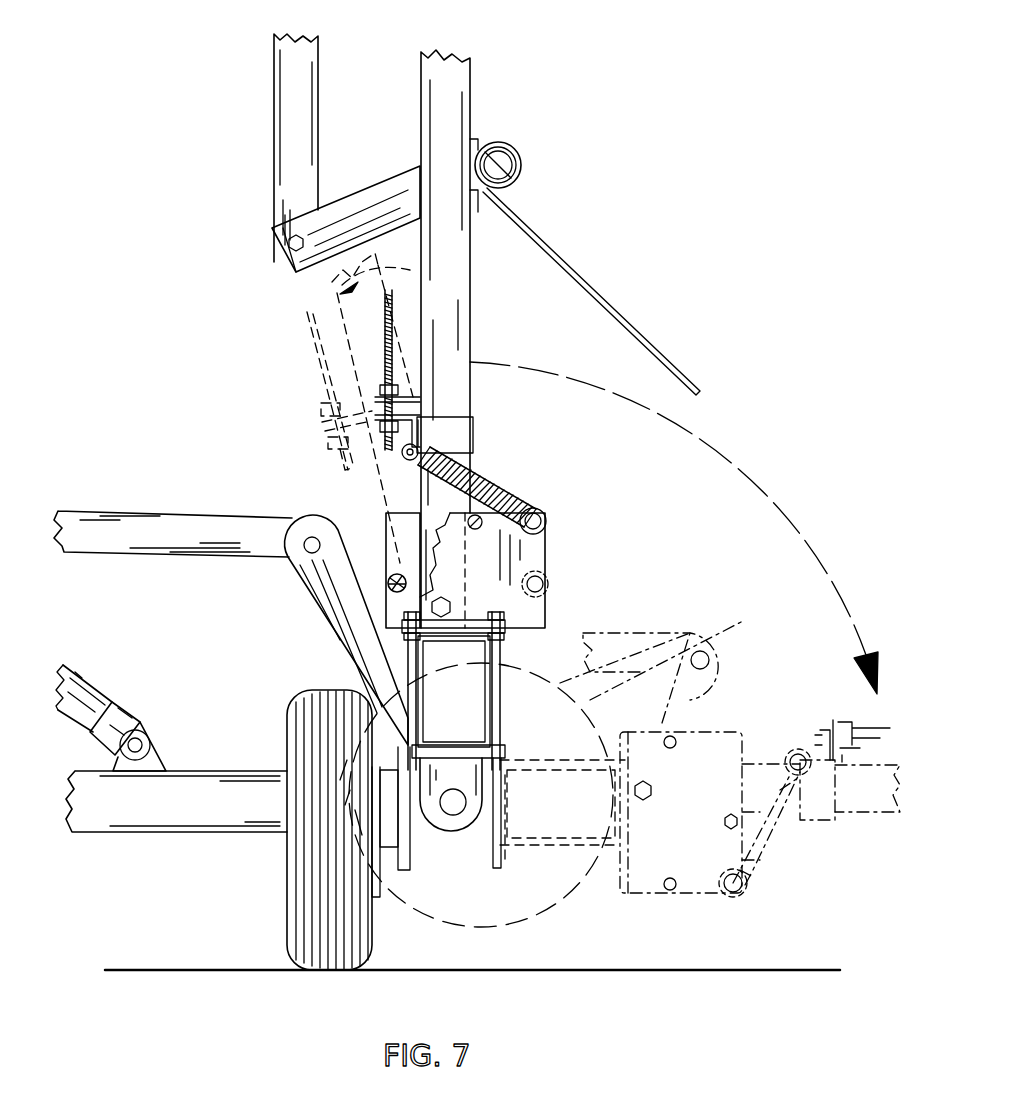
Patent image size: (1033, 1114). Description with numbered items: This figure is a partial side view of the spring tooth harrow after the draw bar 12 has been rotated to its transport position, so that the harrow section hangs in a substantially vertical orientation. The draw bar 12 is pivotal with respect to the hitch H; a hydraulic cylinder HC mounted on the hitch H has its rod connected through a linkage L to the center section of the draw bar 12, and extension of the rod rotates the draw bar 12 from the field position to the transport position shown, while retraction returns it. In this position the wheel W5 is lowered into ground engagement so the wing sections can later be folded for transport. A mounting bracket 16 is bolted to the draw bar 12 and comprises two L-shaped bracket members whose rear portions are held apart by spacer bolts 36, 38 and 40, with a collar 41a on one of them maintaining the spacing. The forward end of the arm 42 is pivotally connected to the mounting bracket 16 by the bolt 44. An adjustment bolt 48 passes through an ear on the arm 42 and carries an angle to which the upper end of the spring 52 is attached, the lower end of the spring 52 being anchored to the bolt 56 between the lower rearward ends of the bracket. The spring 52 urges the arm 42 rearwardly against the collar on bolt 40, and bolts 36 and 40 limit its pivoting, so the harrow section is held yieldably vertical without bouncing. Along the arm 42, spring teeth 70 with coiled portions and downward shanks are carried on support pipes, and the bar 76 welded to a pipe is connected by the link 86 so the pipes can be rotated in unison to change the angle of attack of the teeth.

The draw bar 12 is at (548, 808).
The mounting bracket 16 is at (564, 497).
The spacer bolt 36 is at (388, 590).
The spacer bolt 38 is at (545, 583).
The spacer bolt 40 is at (478, 531).
The collar 41a is at (383, 565).
The arm 42 is at (455, 302).
The bolt 44 is at (452, 607).
The adjustment bolt 48 is at (317, 360).
The spring 52 is at (493, 482).
The bolt 56 is at (545, 521).
The spring tooth 70 is at (622, 320).
The bar 76 is at (404, 198).
The link 86 is at (298, 114).
The linkage L is at (188, 532).
The hitch H is at (198, 771).
The hydraulic cylinder HC is at (95, 685).
The wheel W5 is at (287, 872).